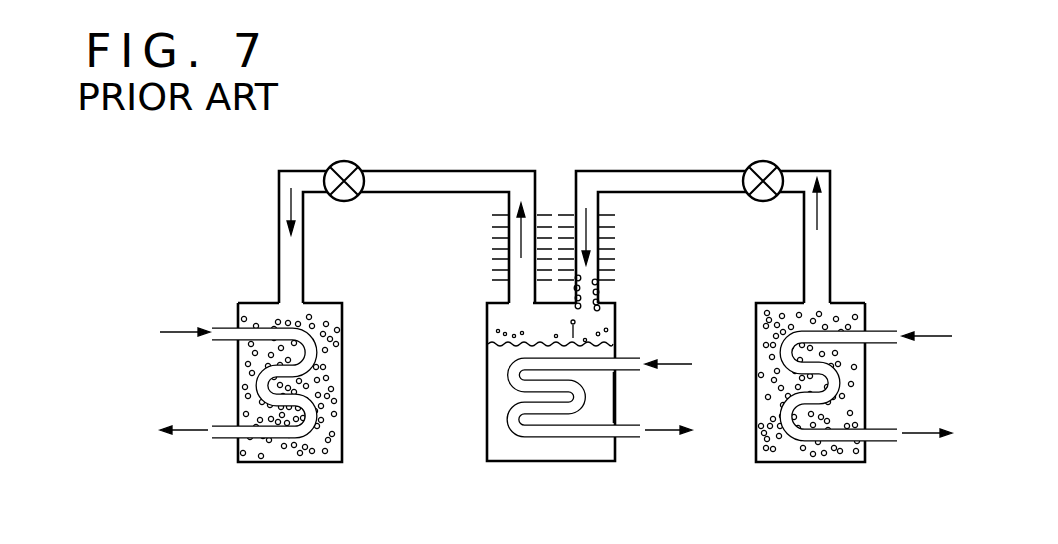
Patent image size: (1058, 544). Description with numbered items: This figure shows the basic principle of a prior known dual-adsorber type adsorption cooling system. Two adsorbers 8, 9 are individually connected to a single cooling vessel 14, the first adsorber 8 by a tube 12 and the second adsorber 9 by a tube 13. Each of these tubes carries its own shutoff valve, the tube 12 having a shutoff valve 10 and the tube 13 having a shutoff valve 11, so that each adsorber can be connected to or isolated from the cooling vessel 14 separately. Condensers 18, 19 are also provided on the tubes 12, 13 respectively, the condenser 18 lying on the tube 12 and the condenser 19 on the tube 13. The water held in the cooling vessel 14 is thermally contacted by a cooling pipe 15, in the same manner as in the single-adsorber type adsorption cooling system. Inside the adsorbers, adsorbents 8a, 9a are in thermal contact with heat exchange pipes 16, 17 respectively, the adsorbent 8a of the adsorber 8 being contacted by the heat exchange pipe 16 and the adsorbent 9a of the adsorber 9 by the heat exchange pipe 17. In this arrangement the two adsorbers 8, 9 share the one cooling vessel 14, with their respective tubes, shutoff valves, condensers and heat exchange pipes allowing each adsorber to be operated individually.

The adsorber 8 is at (290, 463).
The adsorbent 8a is at (258, 303).
The adsorber 9 is at (820, 463).
The adsorbent 9a is at (836, 305).
The shutoff valve 10 is at (350, 160).
The shutoff valve 11 is at (774, 166).
The tube 12 is at (476, 170).
The tube 13 is at (666, 170).
The cooling vessel 14 is at (566, 462).
The cooling pipe 15 is at (620, 438).
The heat exchange pipe 16 is at (222, 337).
The heat exchange pipe 17 is at (876, 344).
The condenser 18 is at (520, 271).
The condenser 19 is at (600, 272).